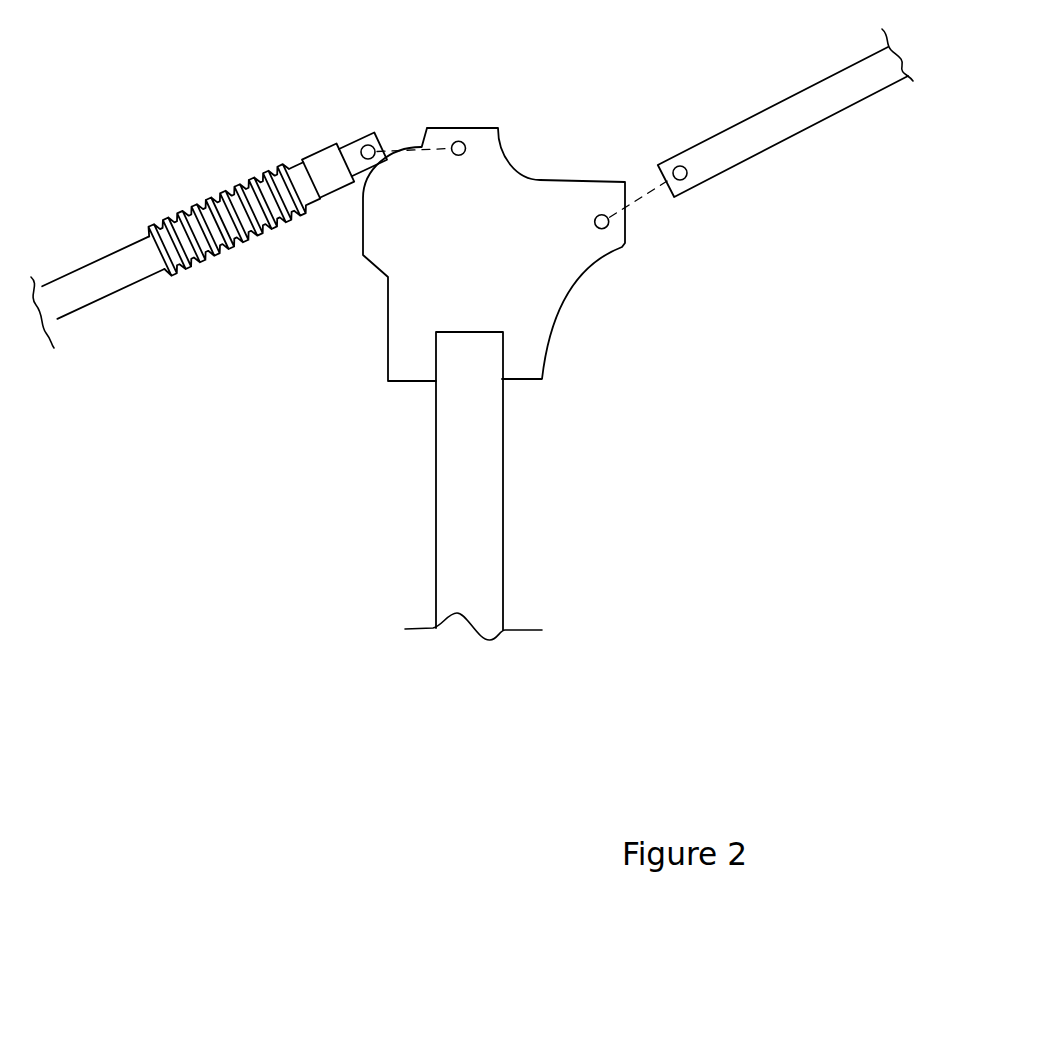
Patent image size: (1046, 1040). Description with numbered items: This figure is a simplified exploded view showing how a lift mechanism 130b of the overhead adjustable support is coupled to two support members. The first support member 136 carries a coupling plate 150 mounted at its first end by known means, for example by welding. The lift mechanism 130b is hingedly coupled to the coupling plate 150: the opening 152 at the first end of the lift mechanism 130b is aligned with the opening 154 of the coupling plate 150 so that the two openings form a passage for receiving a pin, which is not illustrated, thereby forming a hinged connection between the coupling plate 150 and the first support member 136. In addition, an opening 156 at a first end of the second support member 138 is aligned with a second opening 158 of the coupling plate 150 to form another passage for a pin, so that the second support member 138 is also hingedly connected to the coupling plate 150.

The lift mechanism 130b is at (322, 140).
The opening 152 is at (375, 130).
The opening 154 is at (467, 143).
The coupling plate 150 is at (540, 174).
The second opening 158 is at (603, 214).
The second support member 138 is at (760, 112).
The opening 156 is at (687, 178).
The first support member 136 is at (503, 480).